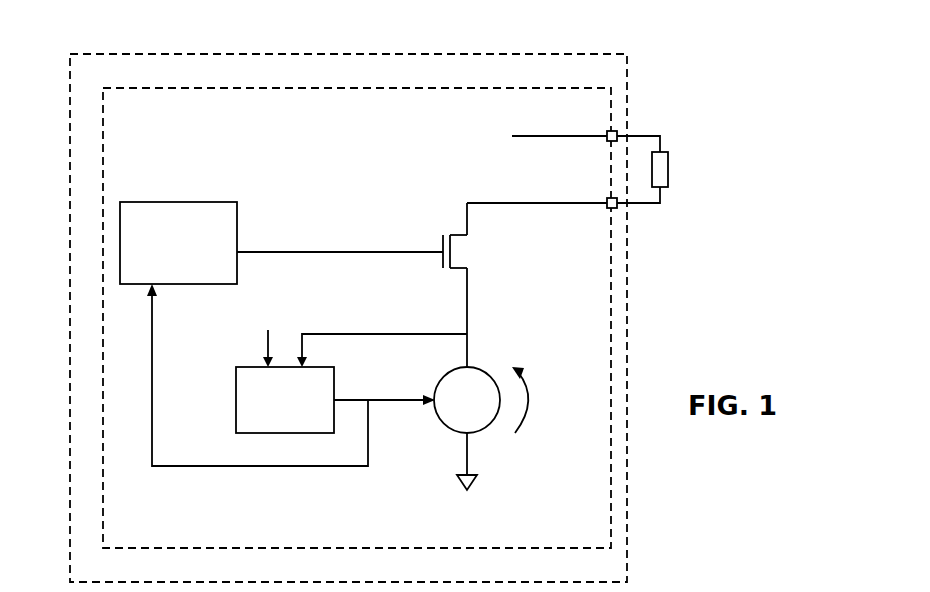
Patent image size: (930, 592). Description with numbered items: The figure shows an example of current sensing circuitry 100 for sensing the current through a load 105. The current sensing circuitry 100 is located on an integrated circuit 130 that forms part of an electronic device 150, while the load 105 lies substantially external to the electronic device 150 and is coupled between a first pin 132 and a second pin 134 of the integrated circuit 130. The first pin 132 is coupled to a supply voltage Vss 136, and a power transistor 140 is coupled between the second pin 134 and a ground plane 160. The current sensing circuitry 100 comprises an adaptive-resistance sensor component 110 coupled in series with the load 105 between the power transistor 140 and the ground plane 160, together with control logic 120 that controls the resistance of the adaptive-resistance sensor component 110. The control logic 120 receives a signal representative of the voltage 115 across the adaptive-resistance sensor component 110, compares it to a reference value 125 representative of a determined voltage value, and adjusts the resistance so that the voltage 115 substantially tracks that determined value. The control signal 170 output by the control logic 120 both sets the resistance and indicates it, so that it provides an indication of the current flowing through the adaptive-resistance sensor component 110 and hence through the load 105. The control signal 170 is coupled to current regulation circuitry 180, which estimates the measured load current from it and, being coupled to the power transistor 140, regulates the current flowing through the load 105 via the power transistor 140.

The current sensing circuitry 100 is at (536, 503).
The load 105 is at (667, 150).
The adaptive-resistance sensor component 110 is at (473, 367).
The voltage 115 is at (398, 333).
The control logic 120 is at (235, 401).
The reference value 125 is at (265, 350).
The integrated circuit 130 is at (357, 318).
The first pin 132 is at (613, 134).
The second pin 134 is at (617, 204).
The supply voltage Vss 136 is at (523, 138).
The power transistor 140 is at (462, 235).
The electronic device 150 is at (543, 53).
The ground plane 160 is at (462, 485).
The control signal 170 is at (380, 400).
The current regulation circuitry 180 is at (235, 185).